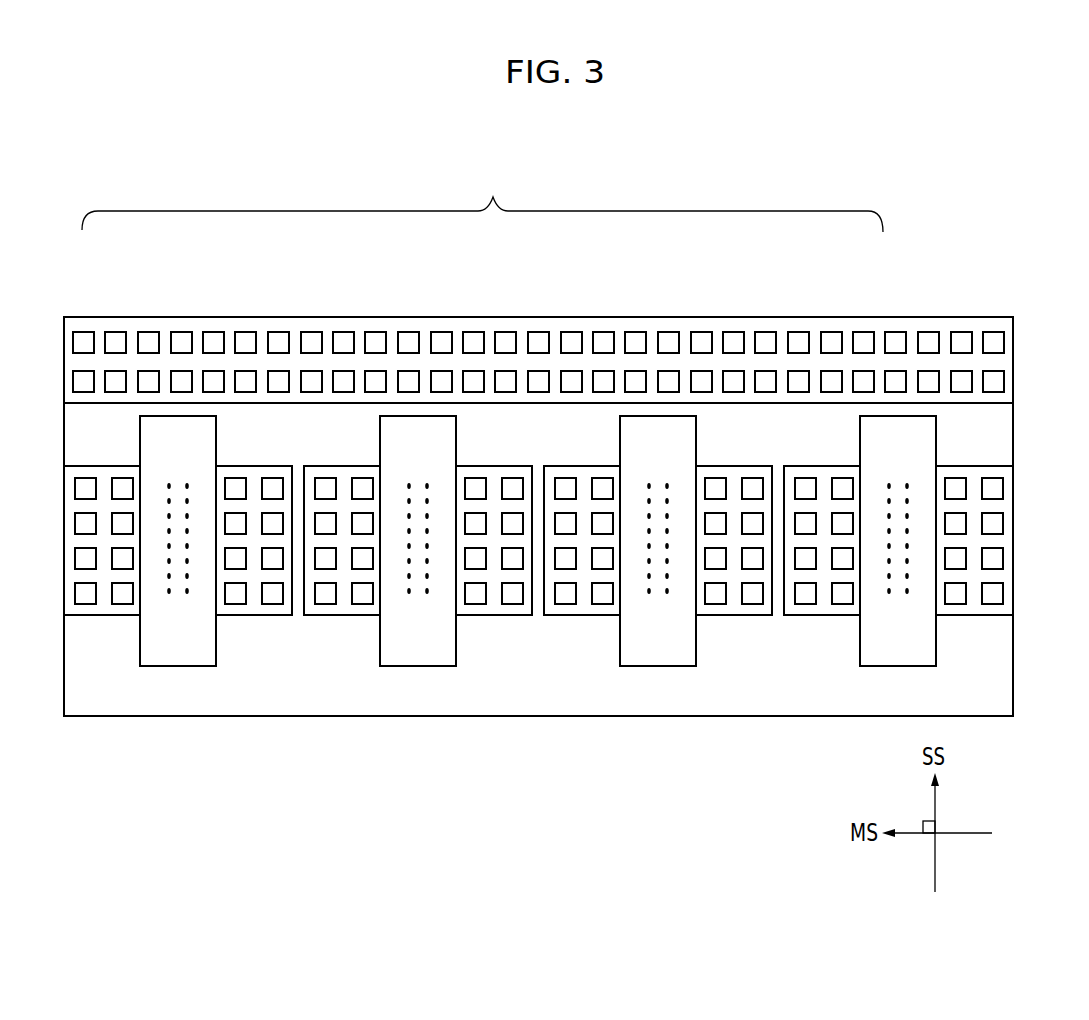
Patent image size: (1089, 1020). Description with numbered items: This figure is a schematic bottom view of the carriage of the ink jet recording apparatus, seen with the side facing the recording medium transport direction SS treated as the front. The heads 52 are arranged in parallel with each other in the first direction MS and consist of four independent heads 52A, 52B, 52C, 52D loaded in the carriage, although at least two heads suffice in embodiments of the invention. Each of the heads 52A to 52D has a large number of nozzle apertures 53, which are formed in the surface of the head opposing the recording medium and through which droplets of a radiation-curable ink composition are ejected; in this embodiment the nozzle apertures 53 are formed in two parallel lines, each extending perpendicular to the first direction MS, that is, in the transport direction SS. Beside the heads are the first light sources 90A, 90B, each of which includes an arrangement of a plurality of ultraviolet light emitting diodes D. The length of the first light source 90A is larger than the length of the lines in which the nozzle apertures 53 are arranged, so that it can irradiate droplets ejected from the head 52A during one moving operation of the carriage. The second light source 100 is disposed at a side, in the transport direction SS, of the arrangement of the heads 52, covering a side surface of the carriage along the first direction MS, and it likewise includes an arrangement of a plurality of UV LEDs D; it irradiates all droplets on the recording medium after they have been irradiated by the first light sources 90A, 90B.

The second light source 100 is at (958, 304).
The heads 52 is at (509, 467).
The head 52A is at (168, 502).
The head 52B is at (388, 399).
The head 52C is at (628, 399).
The head 52D is at (868, 399).
The nozzle apertures 53 is at (170, 592).
The first light source 90A is at (95, 632).
The first light source 90B is at (259, 632).
The ultraviolet light emitting diode D is at (992, 387).